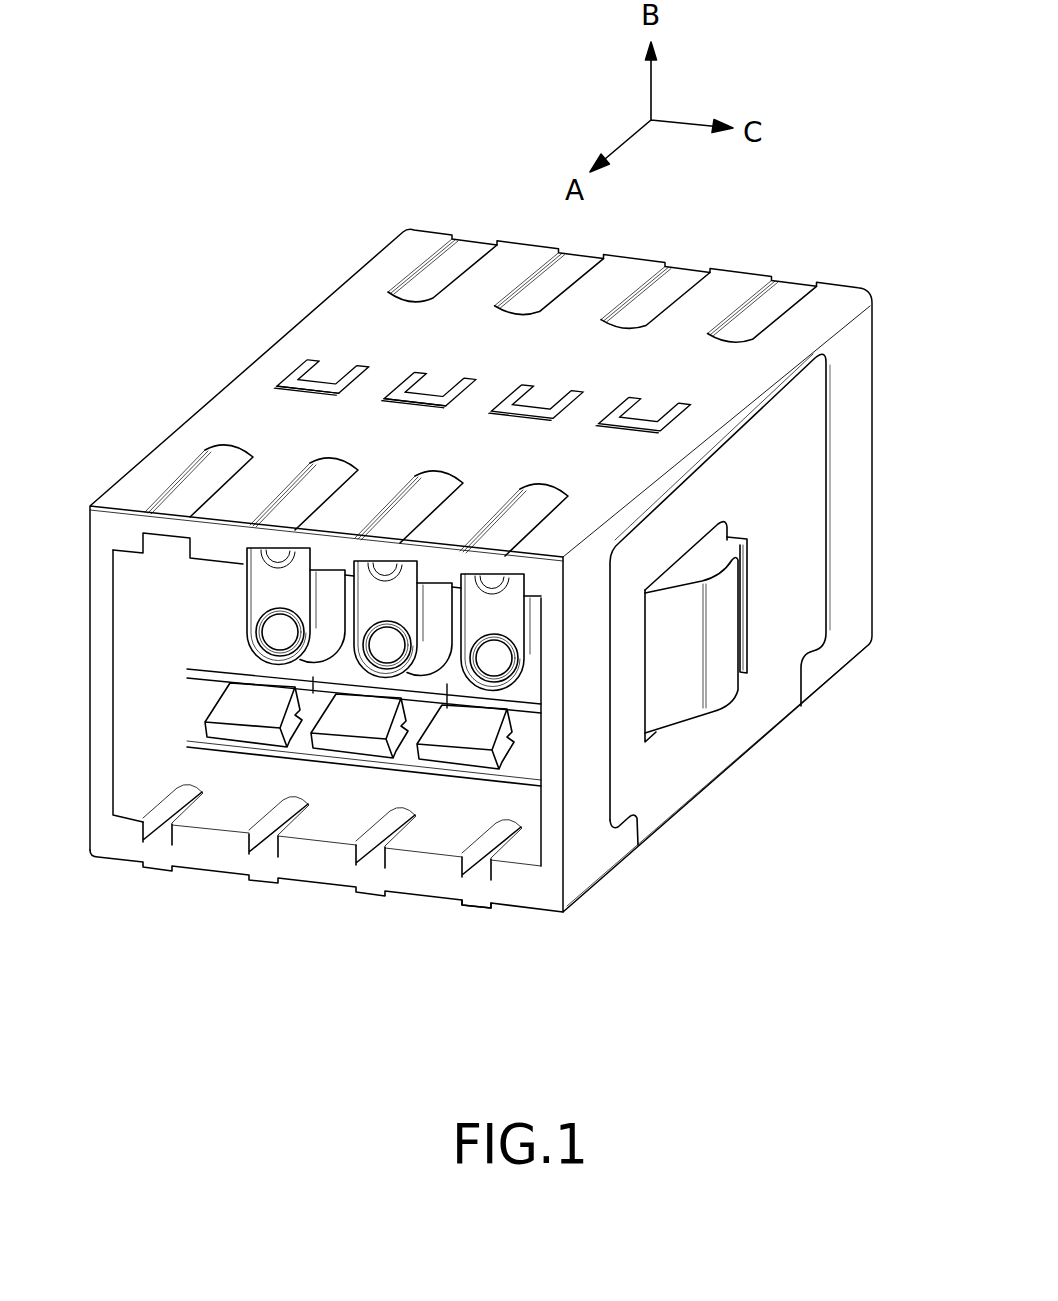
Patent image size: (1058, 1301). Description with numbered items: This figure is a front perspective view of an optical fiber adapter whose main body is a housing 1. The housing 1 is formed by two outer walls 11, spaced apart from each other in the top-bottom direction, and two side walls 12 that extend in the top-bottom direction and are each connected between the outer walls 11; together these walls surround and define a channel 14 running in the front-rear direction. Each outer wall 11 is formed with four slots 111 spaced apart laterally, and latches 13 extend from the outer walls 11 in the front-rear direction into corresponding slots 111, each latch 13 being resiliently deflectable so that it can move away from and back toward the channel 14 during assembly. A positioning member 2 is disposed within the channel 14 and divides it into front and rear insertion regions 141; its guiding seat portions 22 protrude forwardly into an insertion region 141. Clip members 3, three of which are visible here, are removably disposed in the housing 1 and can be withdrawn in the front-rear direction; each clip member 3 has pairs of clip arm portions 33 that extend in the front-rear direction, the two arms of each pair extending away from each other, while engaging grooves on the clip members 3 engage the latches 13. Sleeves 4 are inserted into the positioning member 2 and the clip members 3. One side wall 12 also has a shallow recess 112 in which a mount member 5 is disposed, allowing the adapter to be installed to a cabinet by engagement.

The housing 1 is at (222, 296).
The outer wall 11 is at (378, 274).
The slot 111 is at (287, 376).
The shallow recess 112 is at (812, 440).
The side wall 12 is at (102, 673).
The latch 13 is at (425, 390).
The channel 14 is at (486, 816).
The insertion region 141 is at (476, 904).
The positioning member 2 is at (205, 590).
The guiding seat portion 22 is at (412, 597).
The clip member 3 is at (242, 762).
The clip arm portion 33 is at (237, 706).
The sleeve 4 is at (280, 630).
The mount member 5 is at (698, 705).